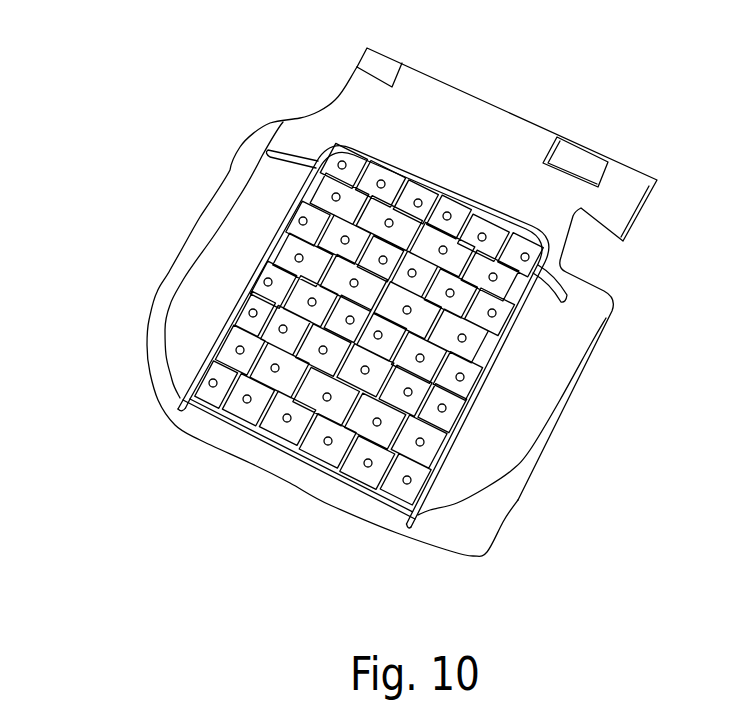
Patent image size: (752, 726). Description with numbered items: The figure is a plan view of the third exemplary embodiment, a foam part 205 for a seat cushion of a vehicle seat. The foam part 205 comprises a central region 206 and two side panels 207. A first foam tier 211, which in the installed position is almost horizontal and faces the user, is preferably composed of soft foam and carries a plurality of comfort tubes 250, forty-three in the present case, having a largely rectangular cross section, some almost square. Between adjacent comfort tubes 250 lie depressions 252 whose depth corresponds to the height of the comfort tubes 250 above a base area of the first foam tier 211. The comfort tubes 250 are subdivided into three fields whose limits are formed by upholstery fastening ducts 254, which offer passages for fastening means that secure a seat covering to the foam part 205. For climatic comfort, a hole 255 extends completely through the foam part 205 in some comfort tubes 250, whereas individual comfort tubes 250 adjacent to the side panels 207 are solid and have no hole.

The foam part 205 is at (530, 561).
The central region 206 is at (355, 484).
The side panels 207 is at (187, 303).
The first foam tier 211 is at (185, 343).
The comfort tubes 250 is at (462, 227).
The depressions 252 is at (525, 319).
The upholstery fastening ducts 254 is at (444, 188).
The hole 255 is at (483, 234).